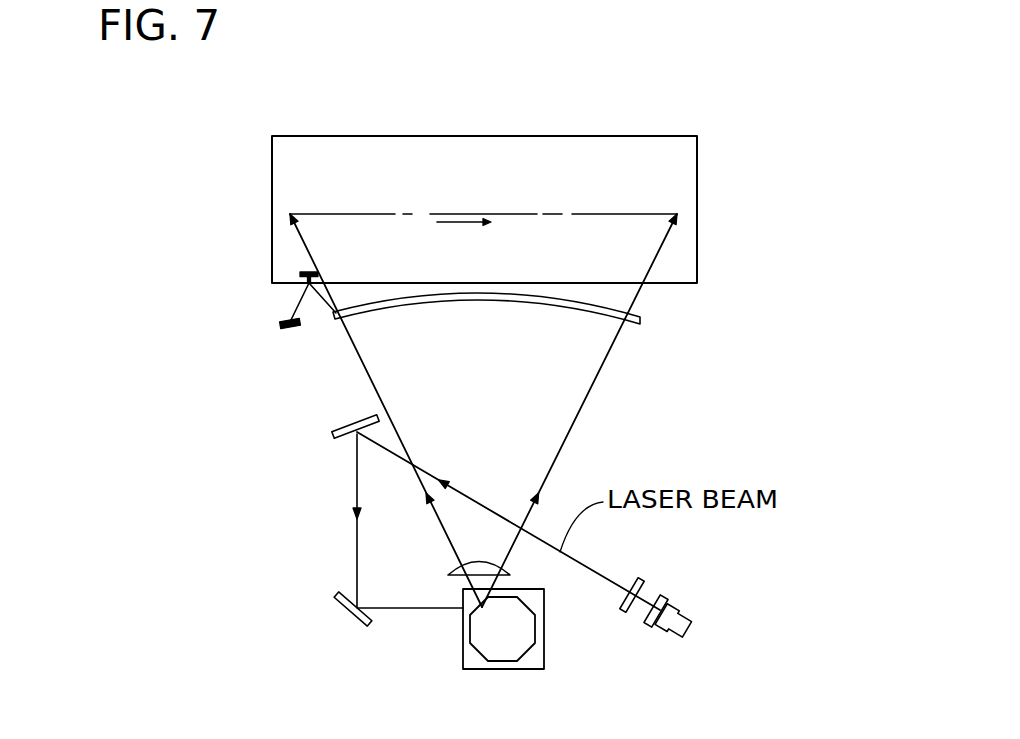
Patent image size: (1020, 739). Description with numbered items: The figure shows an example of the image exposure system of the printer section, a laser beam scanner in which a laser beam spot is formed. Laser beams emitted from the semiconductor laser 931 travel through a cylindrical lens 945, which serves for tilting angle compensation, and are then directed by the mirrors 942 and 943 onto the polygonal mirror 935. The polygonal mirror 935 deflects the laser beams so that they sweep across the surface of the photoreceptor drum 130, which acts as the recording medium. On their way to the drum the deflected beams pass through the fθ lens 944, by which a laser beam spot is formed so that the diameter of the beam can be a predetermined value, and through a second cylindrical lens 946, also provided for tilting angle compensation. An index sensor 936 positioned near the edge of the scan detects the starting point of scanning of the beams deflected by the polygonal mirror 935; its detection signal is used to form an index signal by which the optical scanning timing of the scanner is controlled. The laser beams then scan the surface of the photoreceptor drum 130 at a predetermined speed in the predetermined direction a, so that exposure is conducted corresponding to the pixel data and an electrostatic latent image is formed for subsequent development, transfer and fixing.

The photoreceptor drum 130 is at (615, 148).
The cylindrical lens 946 is at (641, 322).
The index sensor 936 is at (290, 328).
The mirror 942 is at (332, 437).
The mirror 943 is at (347, 608).
The fθ lens 944 is at (448, 574).
The polygonal mirror 935 is at (538, 642).
The cylindrical lens 945 is at (640, 577).
The semiconductor laser 931 is at (693, 628).